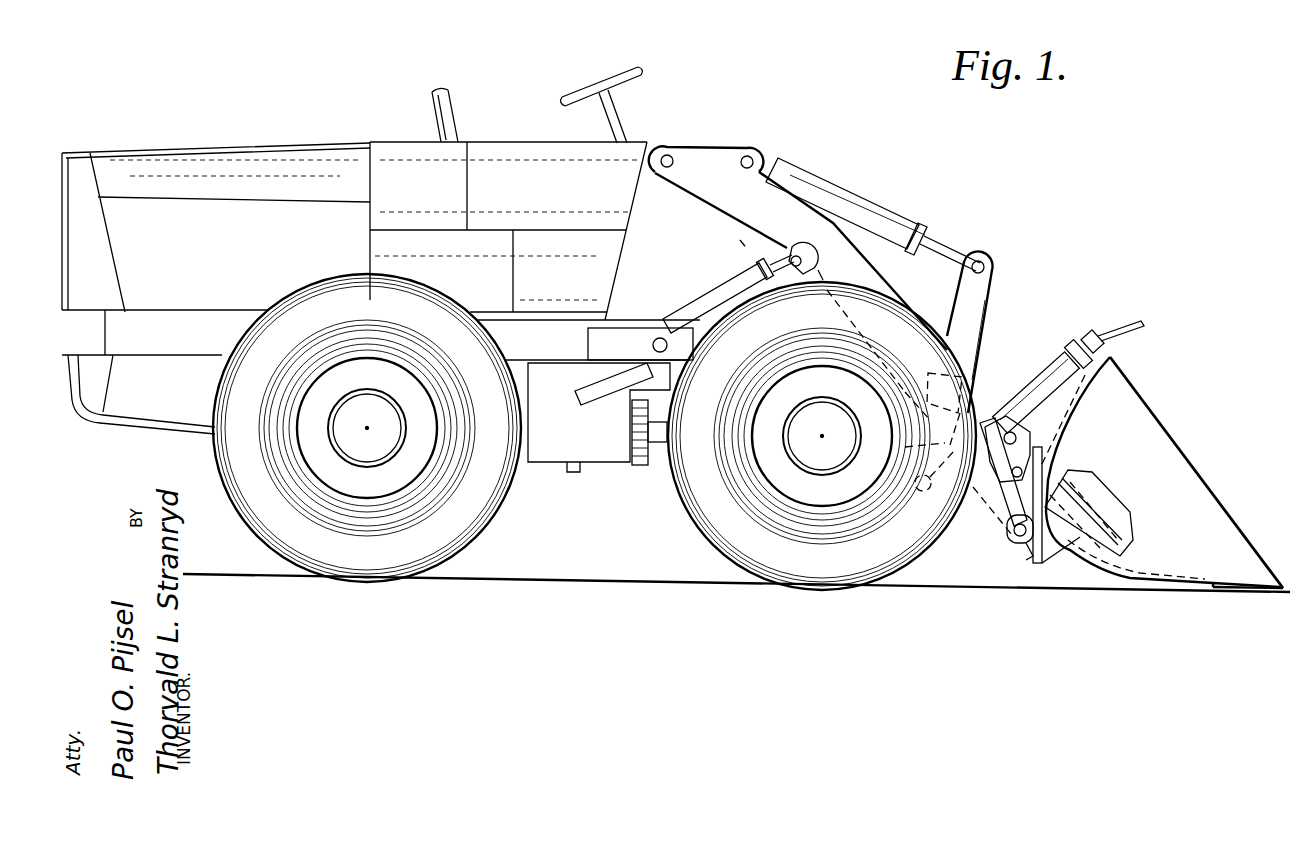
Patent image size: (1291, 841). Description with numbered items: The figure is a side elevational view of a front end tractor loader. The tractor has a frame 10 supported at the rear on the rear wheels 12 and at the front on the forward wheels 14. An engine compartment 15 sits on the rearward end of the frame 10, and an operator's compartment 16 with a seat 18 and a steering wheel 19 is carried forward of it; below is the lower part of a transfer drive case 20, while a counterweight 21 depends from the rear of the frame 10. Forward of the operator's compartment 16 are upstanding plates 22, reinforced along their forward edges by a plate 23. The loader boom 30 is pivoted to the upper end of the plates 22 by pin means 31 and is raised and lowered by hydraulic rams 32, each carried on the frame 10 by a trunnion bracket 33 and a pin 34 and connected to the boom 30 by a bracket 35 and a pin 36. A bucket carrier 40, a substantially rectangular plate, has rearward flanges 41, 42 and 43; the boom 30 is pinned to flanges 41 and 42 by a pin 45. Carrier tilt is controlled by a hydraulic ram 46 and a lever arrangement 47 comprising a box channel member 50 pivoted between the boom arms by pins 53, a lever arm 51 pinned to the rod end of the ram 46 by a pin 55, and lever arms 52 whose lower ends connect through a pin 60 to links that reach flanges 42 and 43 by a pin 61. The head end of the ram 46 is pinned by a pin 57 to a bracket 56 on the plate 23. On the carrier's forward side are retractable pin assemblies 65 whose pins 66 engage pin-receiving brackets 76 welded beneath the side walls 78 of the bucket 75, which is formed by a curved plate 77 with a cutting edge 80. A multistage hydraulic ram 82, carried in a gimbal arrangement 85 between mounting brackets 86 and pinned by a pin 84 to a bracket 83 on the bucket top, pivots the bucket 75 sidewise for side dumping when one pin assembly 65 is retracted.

The frame 10 is at (207, 318).
The rear wheels 12 is at (250, 528).
The forward wheels 14 is at (702, 532).
The engine compartment 15 is at (210, 142).
The operator's compartment 16 is at (494, 127).
The seat 18 is at (440, 92).
The steering wheel 19 is at (598, 80).
The transfer drive case 20 is at (560, 462).
The counterweight 21 is at (150, 430).
The upstanding plates 22 is at (640, 215).
The plate 23 is at (748, 247).
The boom 30 is at (865, 276).
The pin means 31 is at (667, 154).
The hydraulic rams 32 is at (700, 310).
The trunnion bracket 33 is at (590, 343).
The pin 34 is at (658, 337).
The bracket 35 is at (806, 246).
The pin 36 is at (790, 261).
The bucket carrier 40 is at (1035, 570).
The flanges 41 is at (1025, 556).
The flanges 42 is at (1013, 530).
The flanges 43 is at (1000, 505).
The pin 45 is at (1010, 543).
The hydraulic ram 46 is at (863, 197).
The lever arrangement 47 is at (989, 297).
The box channel member 50 is at (936, 352).
The lever arm 51 is at (986, 348).
The lever arms 52 is at (918, 448).
The pins 53 is at (936, 380).
The pin 55 is at (982, 264).
The bracket 56 is at (722, 146).
The pin 57 is at (753, 155).
The pin 60 is at (918, 492).
The pin 61 is at (1024, 468).
The hydraulically retractable pin assemblies 65 is at (1078, 541).
The pins 66 is at (1052, 478).
The bucket 75 is at (1158, 398).
The pin-receiving brackets 76 is at (1113, 502).
The curved plate 77 is at (1170, 576).
The side walls 78 is at (1194, 466).
The cutting edge 80 is at (1260, 592).
The multistage hydraulic ram 82 is at (1040, 392).
The bracket 83 is at (1104, 343).
The pin 84 is at (1078, 345).
The gimbal arrangement 85 is at (1008, 418).
The mounting brackets 86 is at (1078, 421).